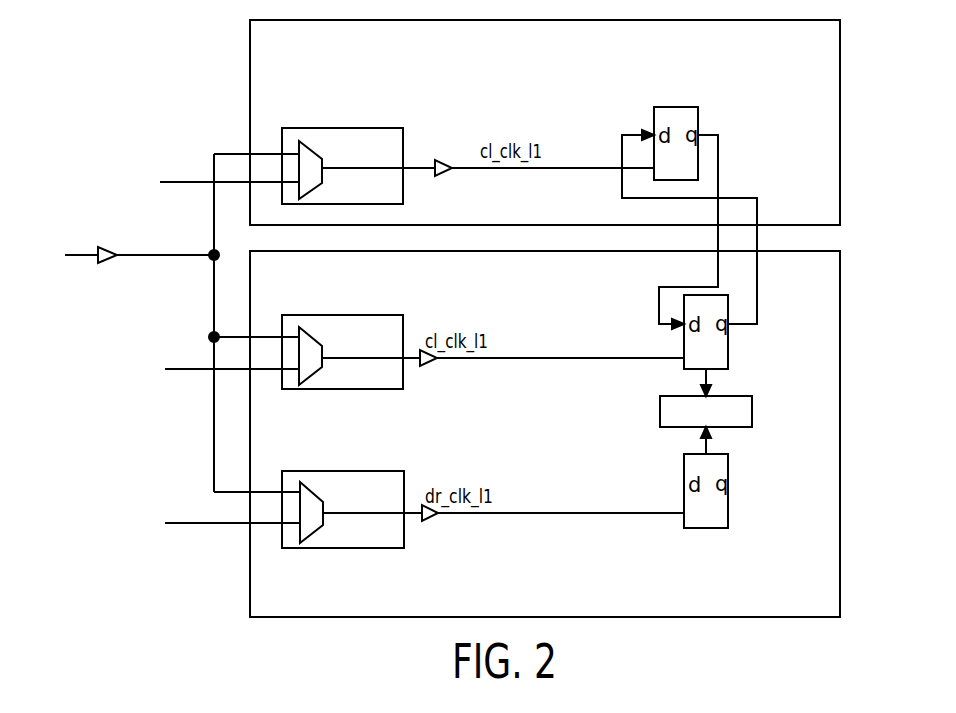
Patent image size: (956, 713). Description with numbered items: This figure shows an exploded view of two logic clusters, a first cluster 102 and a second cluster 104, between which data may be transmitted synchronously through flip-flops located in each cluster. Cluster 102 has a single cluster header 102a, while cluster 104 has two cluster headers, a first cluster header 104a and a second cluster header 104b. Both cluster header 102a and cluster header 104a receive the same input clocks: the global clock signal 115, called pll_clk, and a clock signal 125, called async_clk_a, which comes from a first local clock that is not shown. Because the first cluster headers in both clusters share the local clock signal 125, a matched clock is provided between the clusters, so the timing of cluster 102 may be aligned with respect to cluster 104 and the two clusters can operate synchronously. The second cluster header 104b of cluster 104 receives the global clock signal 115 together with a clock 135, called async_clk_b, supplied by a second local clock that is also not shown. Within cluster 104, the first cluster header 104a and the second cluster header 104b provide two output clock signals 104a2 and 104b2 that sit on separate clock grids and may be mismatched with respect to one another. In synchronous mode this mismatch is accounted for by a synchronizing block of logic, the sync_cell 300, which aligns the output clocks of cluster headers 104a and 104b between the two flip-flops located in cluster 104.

The cluster 102 is at (840, 122).
The cluster 104 is at (840, 412).
The cluster header 102a is at (333, 128).
The first cluster header 104a is at (323, 315).
The second cluster header 104b is at (327, 548).
The clock signal 104a2 is at (429, 367).
The second clock signal 104b2 is at (432, 522).
The global clock signal 115 is at (128, 258).
The clock signal 125 is at (183, 181).
The clock 135 is at (188, 520).
The sync_cell 300 is at (752, 412).